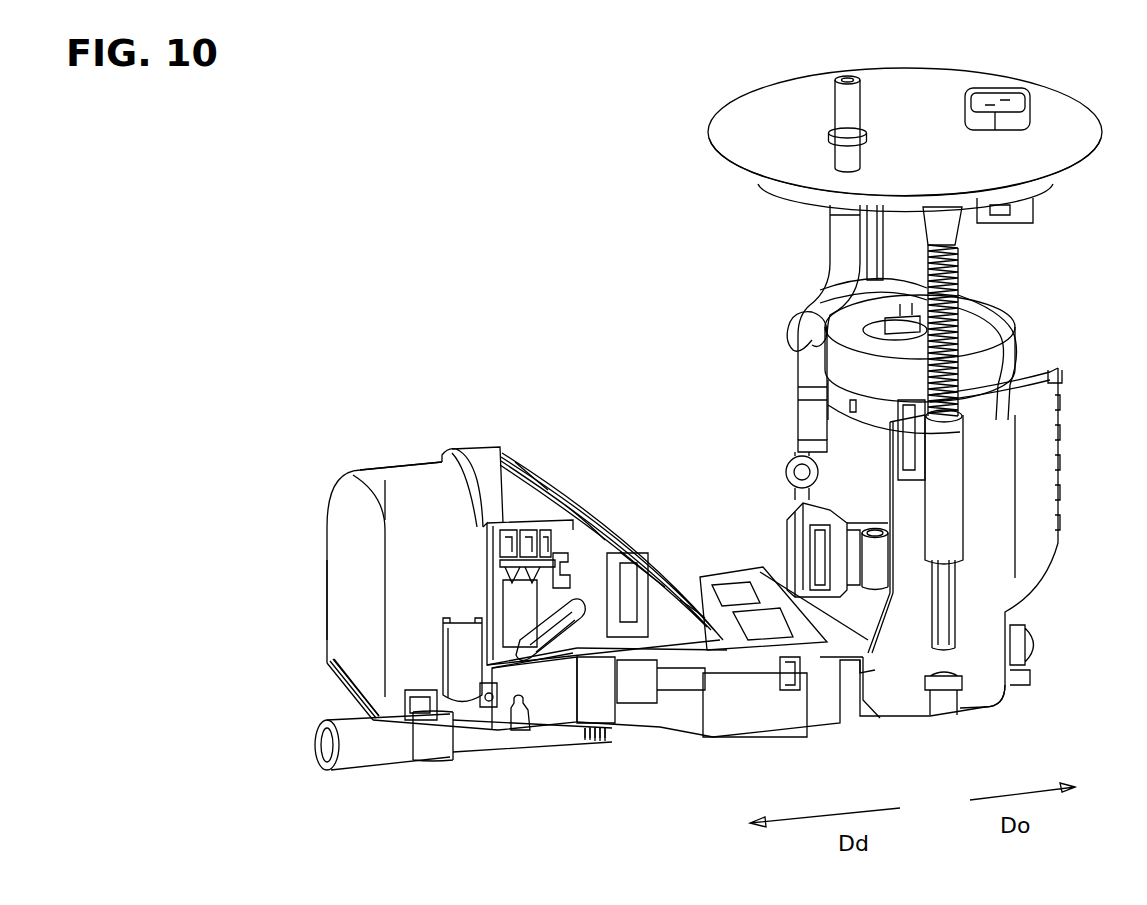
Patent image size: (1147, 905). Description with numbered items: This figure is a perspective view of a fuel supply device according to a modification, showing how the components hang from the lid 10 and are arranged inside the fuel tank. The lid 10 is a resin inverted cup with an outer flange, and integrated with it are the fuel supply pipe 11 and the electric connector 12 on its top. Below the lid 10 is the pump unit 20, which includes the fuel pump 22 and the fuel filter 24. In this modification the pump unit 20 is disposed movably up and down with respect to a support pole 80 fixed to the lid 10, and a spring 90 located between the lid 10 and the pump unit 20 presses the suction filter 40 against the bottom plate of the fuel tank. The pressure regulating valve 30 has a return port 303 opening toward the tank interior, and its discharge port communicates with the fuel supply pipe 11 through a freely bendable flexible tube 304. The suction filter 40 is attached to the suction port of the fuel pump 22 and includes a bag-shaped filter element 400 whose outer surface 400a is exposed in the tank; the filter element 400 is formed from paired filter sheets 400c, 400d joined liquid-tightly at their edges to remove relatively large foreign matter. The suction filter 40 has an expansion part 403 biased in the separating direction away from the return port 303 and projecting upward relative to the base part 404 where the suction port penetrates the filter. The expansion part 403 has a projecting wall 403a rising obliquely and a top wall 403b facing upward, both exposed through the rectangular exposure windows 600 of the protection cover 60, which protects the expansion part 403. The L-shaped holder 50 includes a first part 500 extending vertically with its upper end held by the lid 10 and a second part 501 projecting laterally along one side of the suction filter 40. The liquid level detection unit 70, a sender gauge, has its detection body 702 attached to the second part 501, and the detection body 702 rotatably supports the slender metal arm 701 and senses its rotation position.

The lid 10 is at (778, 100).
The fuel supply pipe 11 is at (852, 76).
The electric connector 12 is at (1020, 90).
The pump unit 20 is at (1031, 350).
The fuel pump 22 is at (940, 545).
The fuel filter 24 is at (972, 378).
The pressure regulating valve 30 is at (789, 439).
The return port 303 is at (786, 466).
The flexible tube 304 is at (800, 322).
The suction filter 40 is at (320, 540).
The L-shaped holder 50 is at (1006, 711).
The protection cover 60 is at (450, 450).
The liquid level detection unit 70 is at (508, 528).
The support pole 80 is at (945, 612).
The spring 90 is at (962, 272).
The filter element 400 is at (1040, 652).
The outer surface 400a is at (780, 628).
The filter sheet 400c is at (330, 612).
The filter sheet 400d is at (333, 676).
The expansion part 403 is at (348, 478).
The projecting wall 403a is at (700, 620).
The top wall 403b is at (412, 468).
The base part 404 is at (880, 647).
The first part 500 is at (1020, 500).
The second part 501 is at (680, 718).
The exposure window 600 is at (545, 462).
The arm 701 is at (537, 685).
The detection body 702 is at (550, 537).